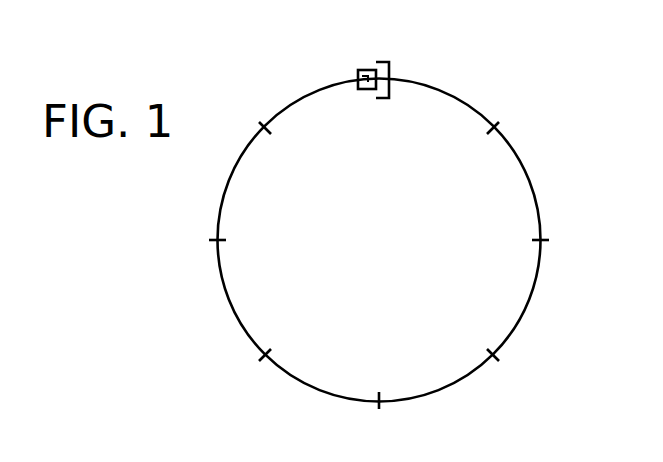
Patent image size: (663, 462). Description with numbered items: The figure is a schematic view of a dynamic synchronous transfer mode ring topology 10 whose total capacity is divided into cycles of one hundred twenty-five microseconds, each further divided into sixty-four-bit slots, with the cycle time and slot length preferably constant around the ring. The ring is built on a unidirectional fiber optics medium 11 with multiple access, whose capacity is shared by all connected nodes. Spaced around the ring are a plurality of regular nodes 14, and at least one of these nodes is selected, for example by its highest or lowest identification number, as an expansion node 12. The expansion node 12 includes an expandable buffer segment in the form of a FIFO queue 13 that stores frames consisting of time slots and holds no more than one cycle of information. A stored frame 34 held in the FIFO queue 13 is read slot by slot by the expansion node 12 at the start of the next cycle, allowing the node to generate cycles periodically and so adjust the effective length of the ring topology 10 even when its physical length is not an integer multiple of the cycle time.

The DTM ring topology 10 is at (478, 77).
The fiber optics medium 11 is at (528, 302).
The expansion node 12 is at (388, 63).
The FIFO queue 13 is at (370, 72).
The regular nodes 14 is at (380, 269).
The stored frame 34 is at (362, 78).